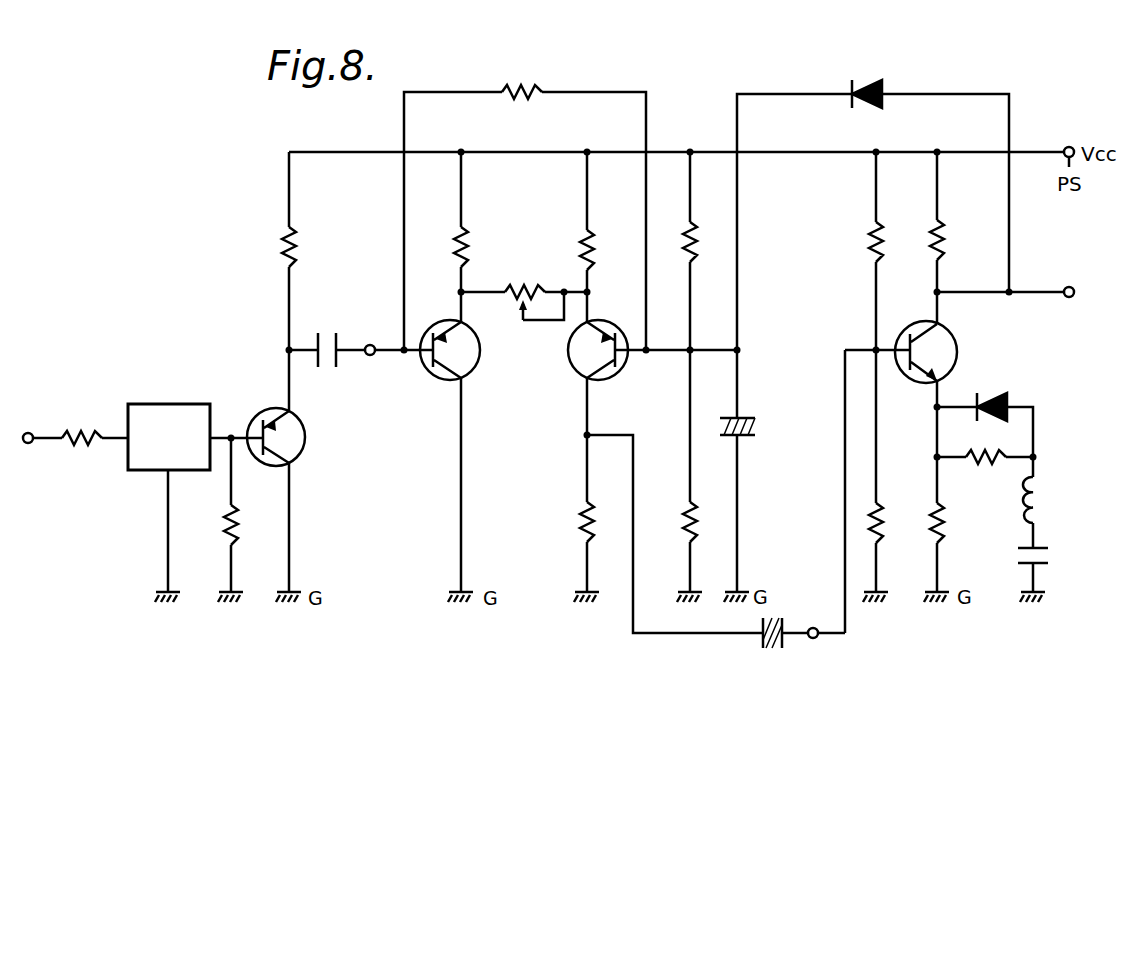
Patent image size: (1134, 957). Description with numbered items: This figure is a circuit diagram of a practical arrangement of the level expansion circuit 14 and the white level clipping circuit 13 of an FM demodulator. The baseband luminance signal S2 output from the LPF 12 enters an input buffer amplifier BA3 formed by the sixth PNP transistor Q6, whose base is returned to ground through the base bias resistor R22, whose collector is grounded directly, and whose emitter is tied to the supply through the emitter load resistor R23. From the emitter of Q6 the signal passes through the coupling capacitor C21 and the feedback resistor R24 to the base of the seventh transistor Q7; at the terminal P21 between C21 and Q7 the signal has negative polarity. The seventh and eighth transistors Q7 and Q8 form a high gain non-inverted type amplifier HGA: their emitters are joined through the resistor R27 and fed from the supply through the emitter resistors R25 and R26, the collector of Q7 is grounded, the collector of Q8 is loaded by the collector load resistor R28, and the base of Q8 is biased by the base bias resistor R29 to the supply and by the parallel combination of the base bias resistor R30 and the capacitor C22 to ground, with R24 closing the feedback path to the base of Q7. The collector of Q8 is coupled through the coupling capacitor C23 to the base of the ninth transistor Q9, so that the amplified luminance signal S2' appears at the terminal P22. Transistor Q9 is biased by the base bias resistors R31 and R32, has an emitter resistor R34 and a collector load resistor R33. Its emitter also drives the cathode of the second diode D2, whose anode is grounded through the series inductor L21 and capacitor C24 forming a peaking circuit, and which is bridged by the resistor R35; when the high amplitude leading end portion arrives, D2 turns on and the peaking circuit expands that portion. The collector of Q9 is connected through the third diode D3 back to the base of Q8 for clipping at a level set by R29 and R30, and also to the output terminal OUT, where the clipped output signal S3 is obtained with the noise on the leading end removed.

The LPF 12 is at (153, 403).
The white level clipping circuit 13 is at (702, 105).
The level expansion circuit 14 is at (1042, 459).
The input buffer amplifier BA3 is at (270, 396).
The sixth PNP transistor Q6 is at (306, 440).
The seventh PNP transistor Q7 is at (481, 350).
The eighth PNP transistor Q8 is at (590, 349).
The ninth PNP transistor Q9 is at (958, 347).
The base bias resistor R22 is at (237, 522).
The emitter load resistor R23 is at (292, 243).
The feedback resistor R24 is at (517, 88).
The emitter resistor R25 is at (466, 246).
The emitter resistor R26 is at (583, 241).
The resistor R27 is at (518, 288).
The collector load resistor R28 is at (580, 525).
The base bias resistor R29 is at (701, 237).
The base bias resistor R30 is at (684, 514).
The base bias resistor R31 is at (868, 233).
The base bias resistor R32 is at (893, 522).
The collector load resistor R33 is at (944, 233).
The emitter resistor R34 is at (945, 528).
The resistor R35 is at (985, 476).
The coupling capacitor C21 is at (328, 369).
The capacitor C22 is at (757, 428).
The coupling capacitor C23 is at (773, 648).
The capacitor C24 is at (1042, 556).
The second diode D2 is at (996, 396).
The third diode D3 is at (866, 82).
The inductor L21 is at (1047, 503).
The baseband luminance signal S2 is at (371, 335).
The amplified luminance signal S2' is at (829, 665).
The output signal S3 is at (1060, 277).
The terminal P21 is at (374, 355).
The terminal P22 is at (812, 628).
The high gain non-inverted type amplifier HGA is at (525, 358).
The output terminal OUT is at (1074, 296).